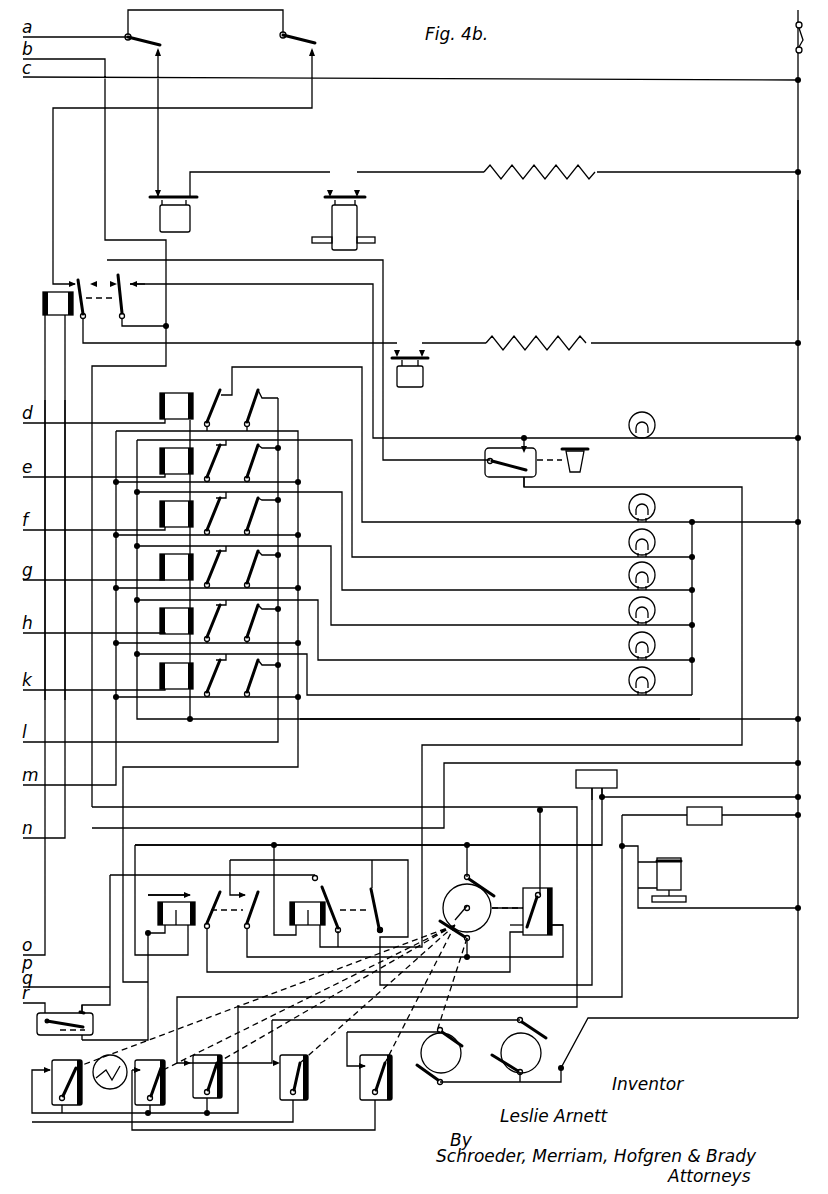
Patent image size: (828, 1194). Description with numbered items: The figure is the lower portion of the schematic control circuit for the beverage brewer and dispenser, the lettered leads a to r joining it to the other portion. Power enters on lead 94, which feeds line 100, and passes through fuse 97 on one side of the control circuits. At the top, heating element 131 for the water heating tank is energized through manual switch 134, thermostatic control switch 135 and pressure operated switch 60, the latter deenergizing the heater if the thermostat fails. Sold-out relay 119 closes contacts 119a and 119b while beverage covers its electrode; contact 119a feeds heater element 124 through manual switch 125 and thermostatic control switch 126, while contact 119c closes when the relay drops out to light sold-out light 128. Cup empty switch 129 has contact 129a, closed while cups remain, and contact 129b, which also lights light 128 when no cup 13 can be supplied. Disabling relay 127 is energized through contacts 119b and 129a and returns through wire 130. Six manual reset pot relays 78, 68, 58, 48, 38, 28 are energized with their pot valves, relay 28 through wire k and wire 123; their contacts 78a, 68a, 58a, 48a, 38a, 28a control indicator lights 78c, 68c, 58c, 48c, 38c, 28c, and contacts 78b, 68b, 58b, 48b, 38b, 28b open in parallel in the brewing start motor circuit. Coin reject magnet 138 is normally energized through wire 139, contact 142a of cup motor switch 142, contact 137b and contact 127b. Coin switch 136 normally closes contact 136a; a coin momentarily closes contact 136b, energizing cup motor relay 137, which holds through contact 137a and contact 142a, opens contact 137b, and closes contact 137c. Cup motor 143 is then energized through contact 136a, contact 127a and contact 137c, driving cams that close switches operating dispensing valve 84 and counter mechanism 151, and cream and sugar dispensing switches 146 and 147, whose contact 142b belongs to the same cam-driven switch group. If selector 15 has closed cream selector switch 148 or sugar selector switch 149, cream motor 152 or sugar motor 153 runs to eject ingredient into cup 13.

The manual switch 134 is at (156, 41).
The manual switch 125 is at (305, 40).
The lead 94 is at (795, 25).
The fuse 97 is at (795, 48).
The heating element 131 is at (540, 172).
The thermostatic control switch 135 is at (192, 224).
The pressure operated switch 60 is at (360, 222).
The line 100 is at (796, 290).
The sold-out relay 119 is at (52, 290).
The contact 119a is at (78, 280).
The contact 119b is at (118, 278).
The contact 119c is at (140, 286).
The thermostatic control switch 126 is at (405, 356).
The heater element 124 is at (538, 343).
The sold-out light 128 is at (655, 415).
The cup empty switch 129 is at (492, 470).
The contact 129a is at (523, 486).
The contact 129b is at (522, 436).
The cup 13 is at (590, 462).
The pot relay 78 is at (169, 414).
The contact 78a is at (222, 392).
The contact 78b is at (262, 394).
The indicator light 78c is at (629, 507).
The pot relay 68 is at (169, 469).
The contact 68a is at (211, 453).
The contact 68b is at (262, 450).
The indicator light 68c is at (629, 542).
The pot relay 58 is at (169, 522).
The contact 58a is at (211, 506).
The contact 58b is at (262, 503).
The indicator light 58c is at (629, 575).
The pot relay 48 is at (169, 575).
The contact 48a is at (211, 559).
The contact 48b is at (262, 557).
The indicator light 48c is at (629, 610).
The pot relay 38 is at (169, 629).
The contact 38a is at (211, 614).
The contact 38b is at (262, 611).
The indicator light 38c is at (629, 645).
The pot relay 28 is at (169, 684).
The contact 28a is at (211, 668).
The contact 28b is at (262, 667).
The indicator light 28c is at (629, 680).
The wire 139 is at (90, 558).
The wire 123 is at (520, 719).
The coin reject magnet 138 is at (617, 781).
The counter mechanism 151 is at (722, 822).
The dispensing valve 84 is at (682, 873).
The cup motor 143 is at (455, 892).
The cup motor switch 142 is at (540, 888).
The contact 142a is at (510, 930).
The contact 142b is at (546, 939).
The wire 130 is at (336, 845).
The cup motor relay 137 is at (178, 926).
The contact 137a is at (185, 895).
The contact 137b is at (198, 903).
The contact 137c is at (257, 903).
The disabling relay 127 is at (308, 926).
The contact 127a is at (334, 900).
The contact 127b is at (388, 900).
The coin switch 136 is at (40, 1030).
The contact 136a is at (92, 1014).
The contact 136b is at (90, 1040).
The cream selector switch 148 is at (66, 1074).
The sugar selector switch 149 is at (150, 1074).
The selector 15 is at (110, 1089).
The cream dispensing switch 146 is at (210, 1062).
The sugar dispensing switch 147 is at (378, 1062).
The sugar motor 153 is at (460, 1040).
The cream motor 152 is at (542, 1038).